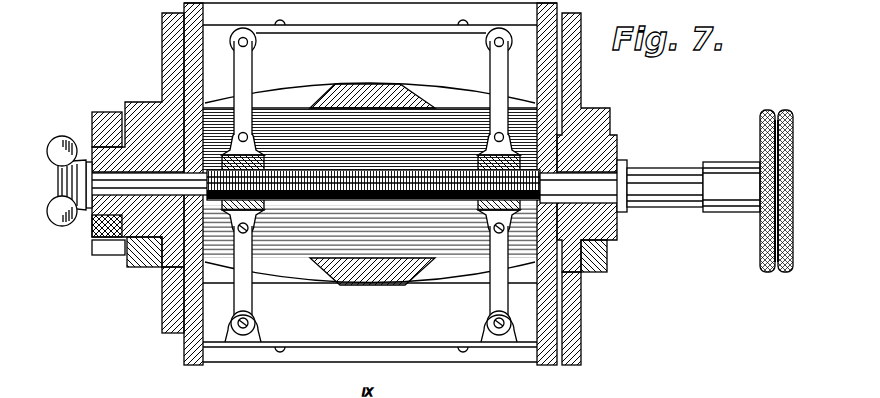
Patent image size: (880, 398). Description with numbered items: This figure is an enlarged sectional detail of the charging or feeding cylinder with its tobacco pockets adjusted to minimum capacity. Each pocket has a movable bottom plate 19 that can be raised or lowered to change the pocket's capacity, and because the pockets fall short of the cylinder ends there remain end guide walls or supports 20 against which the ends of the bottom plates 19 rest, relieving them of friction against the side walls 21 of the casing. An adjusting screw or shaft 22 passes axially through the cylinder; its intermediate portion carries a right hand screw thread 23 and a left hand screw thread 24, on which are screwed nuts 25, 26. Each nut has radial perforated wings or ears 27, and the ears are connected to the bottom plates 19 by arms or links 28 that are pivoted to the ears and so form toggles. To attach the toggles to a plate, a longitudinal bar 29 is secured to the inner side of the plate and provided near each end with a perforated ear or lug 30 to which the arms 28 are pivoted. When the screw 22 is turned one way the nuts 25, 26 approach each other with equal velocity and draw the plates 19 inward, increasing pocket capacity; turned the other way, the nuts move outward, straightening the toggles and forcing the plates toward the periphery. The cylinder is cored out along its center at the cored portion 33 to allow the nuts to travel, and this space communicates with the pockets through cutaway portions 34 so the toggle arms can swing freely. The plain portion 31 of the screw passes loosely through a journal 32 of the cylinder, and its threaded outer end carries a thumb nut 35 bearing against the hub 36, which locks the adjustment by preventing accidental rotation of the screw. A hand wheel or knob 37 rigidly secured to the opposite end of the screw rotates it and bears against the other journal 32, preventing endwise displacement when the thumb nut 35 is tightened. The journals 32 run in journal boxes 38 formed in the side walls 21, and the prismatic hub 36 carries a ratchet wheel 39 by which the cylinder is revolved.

The movable bottom plate 19 is at (357, 27).
The end guide walls or supports 20 is at (194, 362).
The side walls 21 is at (170, 330).
The adjusting screw or shaft 22 is at (685, 192).
The right hand screw thread 23 is at (395, 199).
The left hand screw thread 24 is at (299, 198).
The nut 25 is at (371, 182).
The nut 26 is at (370, 212).
The radial perforated wings or ears 27 is at (370, 112).
The arms or links 28 is at (253, 63).
The longitudinal bar 29 is at (422, 34).
The perforated ear or lug 30 is at (490, 40).
The plain portion 31 is at (125, 246).
The journal 32 is at (158, 242).
The cored portion 33 is at (370, 139).
The cutaway portions 34 is at (382, 184).
The thumb nut 35 is at (58, 218).
The hub 36 is at (110, 222).
The hand wheel or knob 37 is at (760, 272).
The journal boxes 38 is at (163, 254).
The ratchet wheel 39 is at (103, 112).